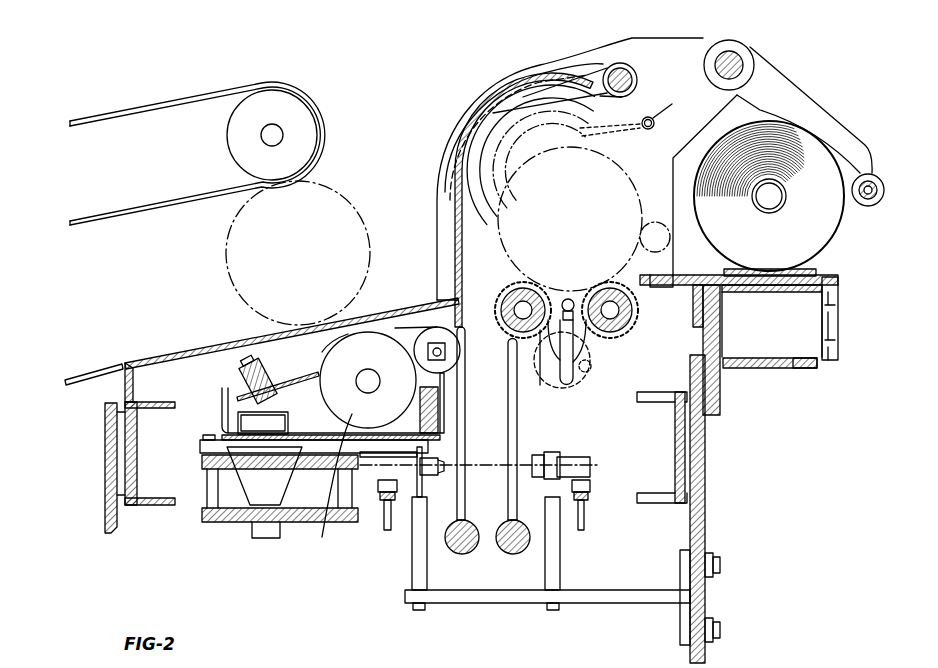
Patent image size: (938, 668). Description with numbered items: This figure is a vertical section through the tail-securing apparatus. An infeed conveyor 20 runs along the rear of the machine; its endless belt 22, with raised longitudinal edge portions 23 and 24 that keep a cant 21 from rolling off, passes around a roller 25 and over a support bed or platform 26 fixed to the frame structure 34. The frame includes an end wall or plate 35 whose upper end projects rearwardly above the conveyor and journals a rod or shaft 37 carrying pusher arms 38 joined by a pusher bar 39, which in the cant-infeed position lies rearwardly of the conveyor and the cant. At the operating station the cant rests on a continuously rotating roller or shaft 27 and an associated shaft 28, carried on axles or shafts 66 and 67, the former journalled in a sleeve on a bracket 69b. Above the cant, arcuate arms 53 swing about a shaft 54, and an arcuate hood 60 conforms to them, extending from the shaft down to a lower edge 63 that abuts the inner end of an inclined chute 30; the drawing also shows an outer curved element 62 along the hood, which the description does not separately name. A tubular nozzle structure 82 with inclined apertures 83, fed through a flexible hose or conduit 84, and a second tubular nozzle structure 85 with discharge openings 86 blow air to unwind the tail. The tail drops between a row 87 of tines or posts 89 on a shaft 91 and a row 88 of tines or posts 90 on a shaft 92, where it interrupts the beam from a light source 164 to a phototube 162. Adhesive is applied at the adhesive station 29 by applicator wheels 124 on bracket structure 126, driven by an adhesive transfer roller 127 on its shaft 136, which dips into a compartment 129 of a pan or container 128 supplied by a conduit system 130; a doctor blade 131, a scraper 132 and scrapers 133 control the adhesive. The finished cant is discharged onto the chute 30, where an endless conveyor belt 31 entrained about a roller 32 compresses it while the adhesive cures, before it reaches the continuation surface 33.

The infeed conveyor 20 is at (848, 308).
The cant 21 is at (246, 241).
The endless belt 22 is at (822, 272).
The raised longitudinal edge portion 23 is at (812, 368).
The raised longitudinal edge portion 24 is at (748, 368).
The roller 25 is at (836, 346).
The support bed or platform 26 is at (766, 292).
The continuously rotating roller or shaft 27 is at (540, 372).
The shaft 28 is at (612, 345).
The adhesive station 29 is at (212, 516).
The inclined chute 30 is at (196, 352).
The endless conveyor belt 31 is at (252, 86).
The roller 32 is at (290, 106).
The surface 33 is at (94, 374).
The frame structure 34 is at (108, 520).
The end wall or plate 35 is at (688, 45).
The rod or shaft 37 is at (738, 62).
The pusher arm 38 is at (796, 96).
The pusher bar 39 is at (656, 232).
The arcuate arm 53 is at (526, 90).
The shaft 54 is at (623, 62).
The hood 60 is at (454, 238).
The cover 62 is at (462, 140).
The lower edge 63 is at (455, 294).
The axle or shaft 66 is at (508, 300).
The axle or shaft 67 is at (632, 314).
The bracket 69b is at (594, 376).
The tubular nozzle structure 82 is at (565, 298).
The aperture 83 is at (572, 298).
The flexible hose or conduit 84 is at (563, 370).
The second tubular nozzle structure 85 is at (674, 102).
The discharge opening 86 is at (640, 120).
The row of tines 87 is at (458, 502).
The row of tines 88 is at (506, 502).
The tine or post 89 is at (465, 438).
The tine or post 90 is at (508, 398).
The shaft 91 is at (468, 522).
The shaft 92 is at (522, 518).
The adhesive applicator wheel 124 is at (418, 346).
The bracket structure 126 is at (446, 374).
The adhesive transfer roller 127 is at (343, 372).
The pan or container 128 is at (220, 400).
The compartment 129 is at (331, 483).
The conduit system 130 is at (262, 530).
The doctor blade 131 is at (300, 374).
The scraper 132 is at (328, 426).
The scraper 133 is at (380, 384).
The shaft 136 is at (358, 392).
The phototube 162 is at (588, 470).
The light source 164 is at (386, 492).